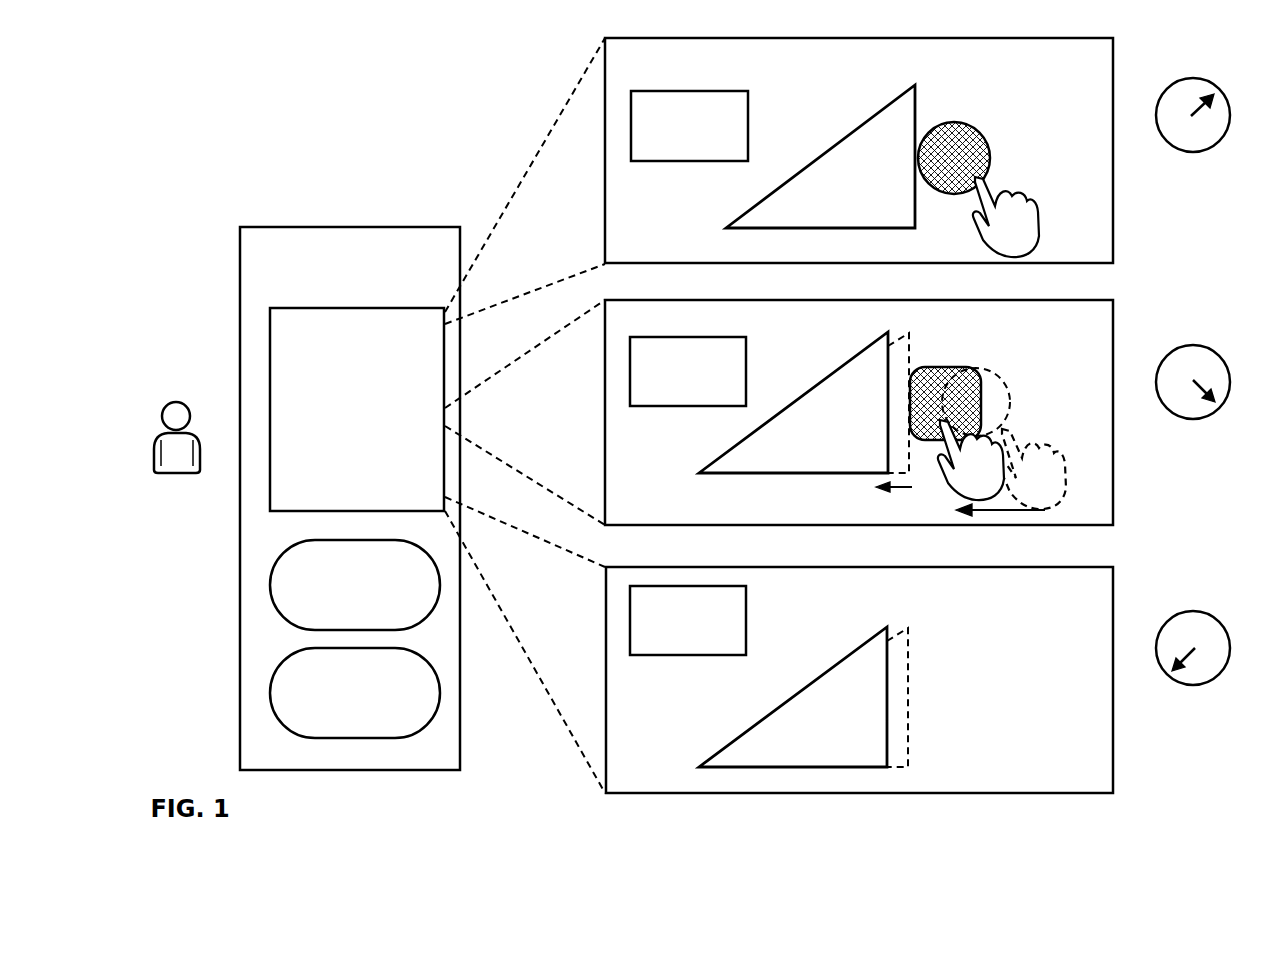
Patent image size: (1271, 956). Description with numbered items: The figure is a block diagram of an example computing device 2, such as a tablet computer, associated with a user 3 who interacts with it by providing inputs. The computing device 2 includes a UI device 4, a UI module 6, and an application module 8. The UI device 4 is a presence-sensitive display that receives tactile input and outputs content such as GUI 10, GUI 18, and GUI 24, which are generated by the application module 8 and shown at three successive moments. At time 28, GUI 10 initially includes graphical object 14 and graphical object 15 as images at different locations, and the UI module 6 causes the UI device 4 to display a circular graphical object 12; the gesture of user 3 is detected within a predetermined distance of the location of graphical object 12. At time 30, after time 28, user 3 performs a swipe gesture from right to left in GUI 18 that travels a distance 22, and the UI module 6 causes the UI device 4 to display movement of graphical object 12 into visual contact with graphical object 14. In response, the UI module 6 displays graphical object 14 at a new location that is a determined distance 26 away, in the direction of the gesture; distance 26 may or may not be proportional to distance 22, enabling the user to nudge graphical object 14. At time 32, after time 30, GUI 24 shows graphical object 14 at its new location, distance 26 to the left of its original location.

The computing device 2 is at (350, 498).
The user 3 is at (177, 463).
The UI device 4 is at (357, 409).
The UI module 6 is at (355, 585).
The application module 8 is at (355, 693).
The GUI 10 is at (859, 150).
The graphical object 12 is at (990, 144).
The graphical object 14 is at (893, 96).
The graphical object 15 is at (748, 106).
The GUI 18 is at (859, 412).
The distance 22 is at (989, 510).
The GUI 24 is at (859, 680).
The determined distance 26 is at (884, 487).
The time 28 is at (1193, 141).
The time 30 is at (1193, 407).
The time 32 is at (1193, 673).